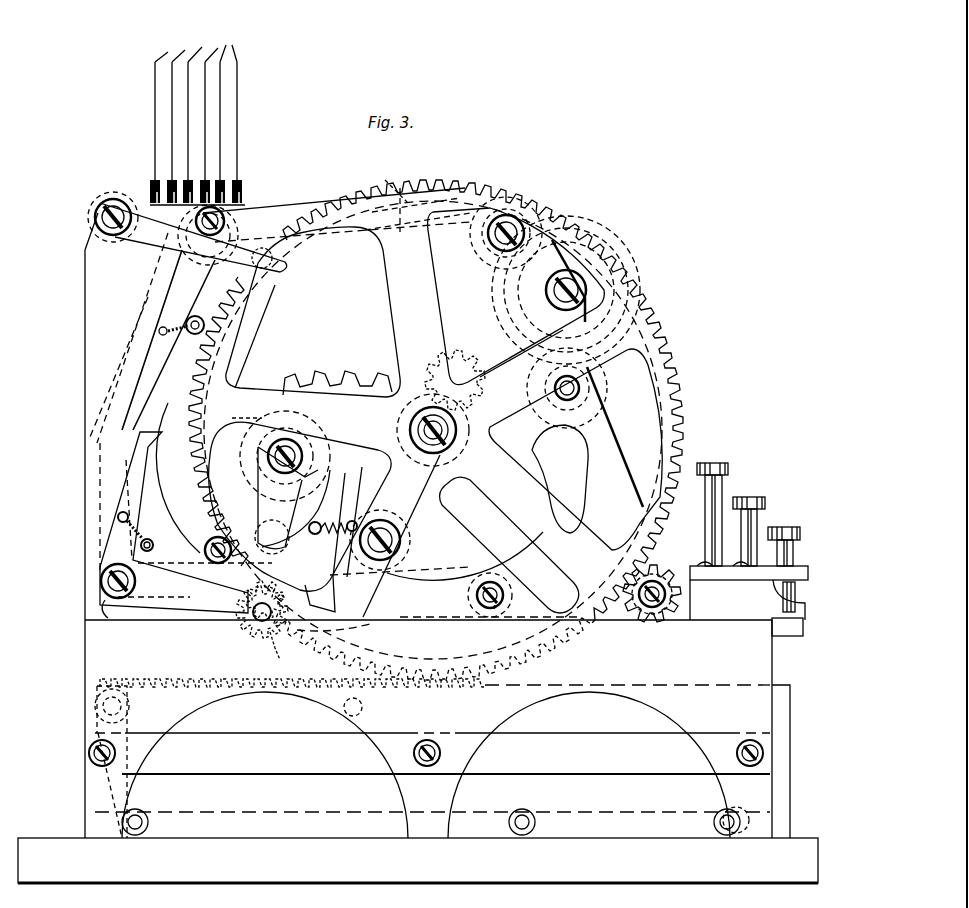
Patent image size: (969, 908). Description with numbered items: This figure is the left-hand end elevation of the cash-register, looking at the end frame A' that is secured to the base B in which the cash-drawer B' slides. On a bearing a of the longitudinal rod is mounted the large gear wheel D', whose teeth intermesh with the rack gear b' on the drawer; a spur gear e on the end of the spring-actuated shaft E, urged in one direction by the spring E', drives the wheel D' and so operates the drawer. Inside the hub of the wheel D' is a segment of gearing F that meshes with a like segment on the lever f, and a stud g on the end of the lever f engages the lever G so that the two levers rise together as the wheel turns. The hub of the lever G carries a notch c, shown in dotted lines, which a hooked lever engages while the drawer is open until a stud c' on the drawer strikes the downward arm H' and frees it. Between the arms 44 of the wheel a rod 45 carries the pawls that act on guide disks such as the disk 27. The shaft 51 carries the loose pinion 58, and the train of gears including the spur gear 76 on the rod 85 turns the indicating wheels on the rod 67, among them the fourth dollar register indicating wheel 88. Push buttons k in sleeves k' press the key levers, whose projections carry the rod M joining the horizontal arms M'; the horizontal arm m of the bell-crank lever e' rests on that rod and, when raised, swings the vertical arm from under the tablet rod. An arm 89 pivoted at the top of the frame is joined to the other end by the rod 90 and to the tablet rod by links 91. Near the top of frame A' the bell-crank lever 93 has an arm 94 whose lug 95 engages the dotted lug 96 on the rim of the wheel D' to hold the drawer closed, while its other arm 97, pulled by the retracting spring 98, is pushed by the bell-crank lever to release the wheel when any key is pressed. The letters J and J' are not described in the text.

The bearings a is at (448, 427).
The end frame A' is at (361, 397).
The base B is at (418, 795).
The cash-drawer B' is at (452, 525).
The rack gear b' is at (292, 667).
The notches c is at (281, 450).
The studs c' is at (244, 706).
The gear wheel D' is at (489, 425).
The shaft E is at (652, 611).
The spring E' is at (337, 370).
The spur gear e is at (671, 594).
The bell-crank lever e' is at (100, 609).
The segment of gearing F is at (386, 382).
The lever f is at (318, 456).
The lever G is at (215, 515).
The stud g is at (272, 537).
The downward projecting arm H' is at (405, 623).
The terminal J is at (186, 172).
The wires J' is at (197, 108).
The push buttons k is at (757, 558).
The sleeves k' is at (804, 597).
The rod M is at (253, 620).
The horizontal arm M' is at (438, 586).
The horizontal arm m is at (186, 522).
The rotating guide disk 27 is at (336, 522).
The arms 44 is at (390, 530).
The rod 45 is at (402, 548).
The shaft 51 is at (565, 392).
The loose pinion 58 is at (590, 383).
The rod 67 is at (552, 296).
The spur gear wheel 76 is at (548, 213).
The rod 85 is at (496, 243).
The fourth dollar register indicating wheel 88 is at (612, 254).
The arm 89 is at (187, 232).
The rod 90 is at (256, 260).
The links 91 is at (232, 421).
The bell-crank lever 93 is at (226, 216).
The arm 94 is at (300, 207).
The lug 95 is at (392, 195).
The lug 96 is at (400, 190).
The arm 97 is at (152, 403).
The retracting spring 98 is at (193, 334).